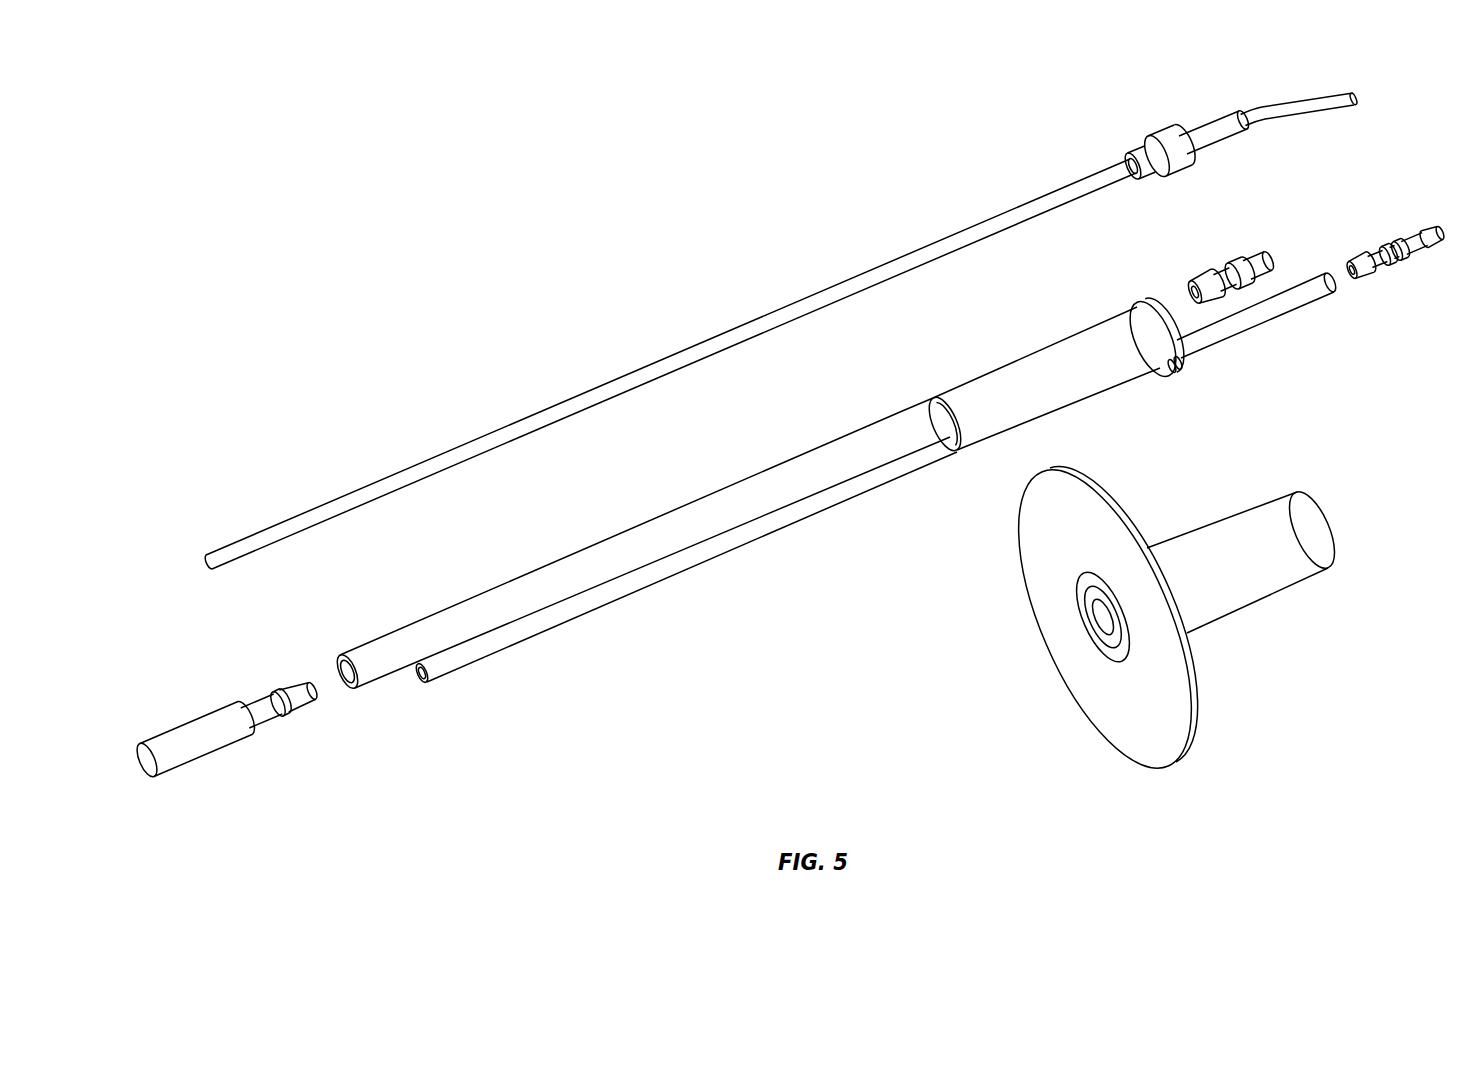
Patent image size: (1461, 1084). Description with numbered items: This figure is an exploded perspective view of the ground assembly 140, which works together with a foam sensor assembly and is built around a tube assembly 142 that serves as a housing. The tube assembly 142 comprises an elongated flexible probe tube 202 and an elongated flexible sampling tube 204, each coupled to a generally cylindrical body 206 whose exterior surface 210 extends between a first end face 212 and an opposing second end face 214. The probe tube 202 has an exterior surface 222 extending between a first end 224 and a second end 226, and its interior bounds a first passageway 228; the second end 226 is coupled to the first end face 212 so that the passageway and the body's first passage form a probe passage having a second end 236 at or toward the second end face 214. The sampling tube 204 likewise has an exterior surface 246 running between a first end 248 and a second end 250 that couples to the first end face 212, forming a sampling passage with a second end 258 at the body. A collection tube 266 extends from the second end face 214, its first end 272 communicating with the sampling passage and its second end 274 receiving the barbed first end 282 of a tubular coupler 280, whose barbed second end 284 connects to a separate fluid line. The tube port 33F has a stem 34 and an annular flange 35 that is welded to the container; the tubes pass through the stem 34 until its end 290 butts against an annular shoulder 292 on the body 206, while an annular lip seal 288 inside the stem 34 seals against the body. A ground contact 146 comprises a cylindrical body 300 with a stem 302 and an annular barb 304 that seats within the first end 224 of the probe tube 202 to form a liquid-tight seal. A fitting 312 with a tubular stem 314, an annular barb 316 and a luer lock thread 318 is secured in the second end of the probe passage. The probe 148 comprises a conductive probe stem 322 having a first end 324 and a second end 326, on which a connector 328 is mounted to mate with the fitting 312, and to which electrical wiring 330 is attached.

The ground assembly 140 is at (1058, 104).
The probe 148 is at (725, 337).
The probe stem 322 is at (605, 382).
The first end 324 is at (205, 533).
The second end 326 is at (1140, 126).
The connector 328 is at (1165, 147).
The electrical wiring 330 is at (1300, 100).
The tube assembly 142 is at (900, 388).
The probe tube 202 is at (650, 520).
The exterior surface 222 is at (770, 468).
The second end 226 is at (926, 388).
The first end 224 is at (370, 616).
The first passageway 228 is at (346, 690).
The sampling tube 204 is at (737, 542).
The exterior surface 246 is at (812, 520).
The first end 248 is at (440, 687).
The body 206 is at (1035, 410).
The exterior surface 210 is at (1070, 337).
The first end face 212 is at (958, 455).
The second end 250 is at (949, 484).
The second end 236 is at (1126, 298).
The annular shoulder 292 is at (1147, 300).
The second end 258 is at (1157, 402).
The second end face 214 is at (1176, 382).
The first end 272 is at (1192, 368).
The collection tube 266 is at (1255, 322).
The second end 274 is at (1351, 311).
The annular barb 316 is at (1196, 278).
The tubular stem 314 is at (1226, 265).
The fitting 312 is at (1249, 264).
The luer lock thread 318 is at (1273, 265).
The first end 282 is at (1348, 260).
The tubular coupler 280 is at (1389, 240).
The second end 284 is at (1424, 237).
The stem 34 is at (1237, 495).
The tube port 33F is at (1250, 625).
The end 290 is at (1345, 573).
The annular flange 35 is at (1143, 730).
The annular lip seal 288 is at (1100, 633).
The cylindrical body 300 is at (180, 716).
The ground contact 146 is at (205, 762).
The stem 302 is at (258, 692).
The annular barb 304 is at (298, 725).